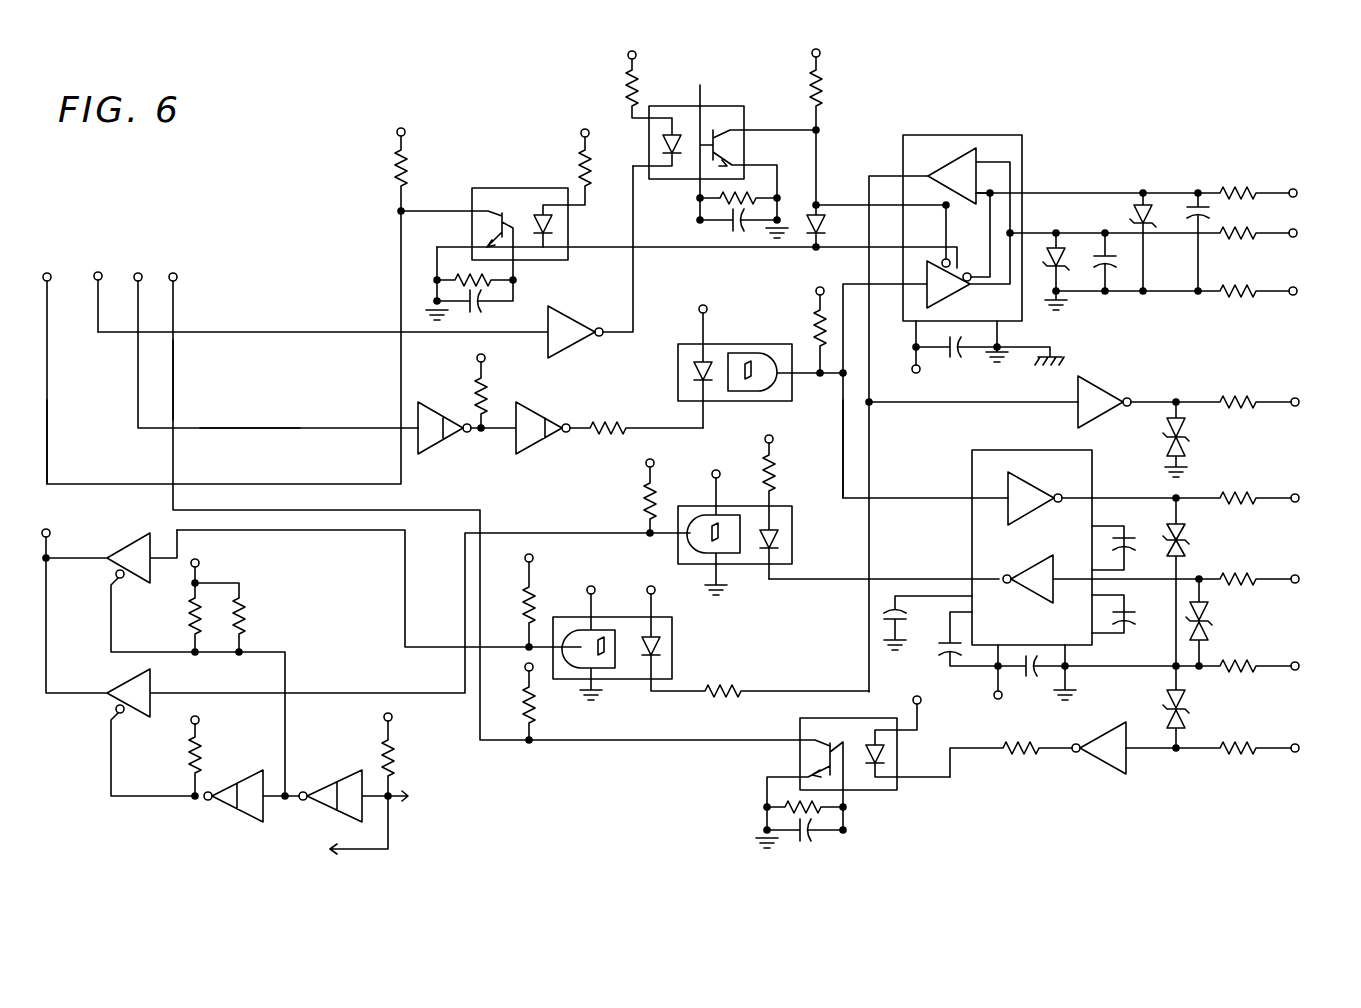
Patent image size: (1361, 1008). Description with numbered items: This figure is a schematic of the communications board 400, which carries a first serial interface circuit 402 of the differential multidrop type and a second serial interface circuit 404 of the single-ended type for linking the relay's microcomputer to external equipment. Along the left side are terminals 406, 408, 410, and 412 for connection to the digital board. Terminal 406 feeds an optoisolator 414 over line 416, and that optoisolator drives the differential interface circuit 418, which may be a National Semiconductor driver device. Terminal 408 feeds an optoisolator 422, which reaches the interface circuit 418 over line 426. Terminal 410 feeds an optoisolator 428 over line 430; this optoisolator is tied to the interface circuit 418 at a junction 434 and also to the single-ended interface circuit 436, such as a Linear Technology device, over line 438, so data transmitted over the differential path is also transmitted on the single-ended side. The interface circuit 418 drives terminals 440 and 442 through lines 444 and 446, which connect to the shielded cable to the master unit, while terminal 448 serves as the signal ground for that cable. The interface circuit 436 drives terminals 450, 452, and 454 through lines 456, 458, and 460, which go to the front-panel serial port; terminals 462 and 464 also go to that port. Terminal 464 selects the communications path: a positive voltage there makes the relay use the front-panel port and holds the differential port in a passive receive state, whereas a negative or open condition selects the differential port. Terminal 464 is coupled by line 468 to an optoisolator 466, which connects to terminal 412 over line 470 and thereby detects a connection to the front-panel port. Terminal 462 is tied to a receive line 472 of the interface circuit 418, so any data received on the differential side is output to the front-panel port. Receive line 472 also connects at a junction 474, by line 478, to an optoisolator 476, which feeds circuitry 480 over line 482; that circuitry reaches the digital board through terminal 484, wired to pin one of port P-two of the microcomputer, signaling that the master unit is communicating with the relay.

The communications board 400 is at (269, 232).
The RS-485 interface circuit 402 is at (1062, 149).
The RS-232 interface circuit 404 is at (1140, 780).
The terminal 406 is at (55, 256).
The terminal 408 is at (99, 270).
The terminal 410 is at (137, 272).
The terminal 412 is at (176, 272).
The optoisolator 414 is at (509, 173).
The line 416 is at (48, 448).
The RS-485 interface circuit 418 is at (964, 135).
The optoisolator 422 is at (723, 106).
The line 426 is at (852, 186).
The optoisolator 428 is at (723, 346).
The line 430 is at (252, 428).
The junction 434 is at (842, 377).
The RS-232 interface circuit 436 is at (974, 450).
The line 438 is at (841, 432).
The terminal 440 is at (1294, 189).
The terminal 442 is at (1293, 229).
The line 444 is at (1094, 193).
The line 446 is at (1088, 212).
The terminal 448 is at (1293, 287).
The terminal 450 is at (1291, 495).
The terminal 452 is at (1291, 575).
The terminal 454 is at (1294, 662).
The line 456 is at (1112, 495).
The line 458 is at (1128, 581).
The line 460 is at (1095, 668).
The terminal 462 is at (1299, 398).
The terminal 464 is at (1294, 744).
The optoisolator 466 is at (865, 790).
The line 468 is at (969, 752).
The line 470 is at (174, 380).
The receive line 472 is at (872, 172).
The junction 474 is at (870, 403).
The optoisolator 476 is at (672, 627).
The line 478 is at (860, 578).
The circuitry 480 is at (283, 604).
The line 482 is at (405, 590).
The terminal 484 is at (48, 533).